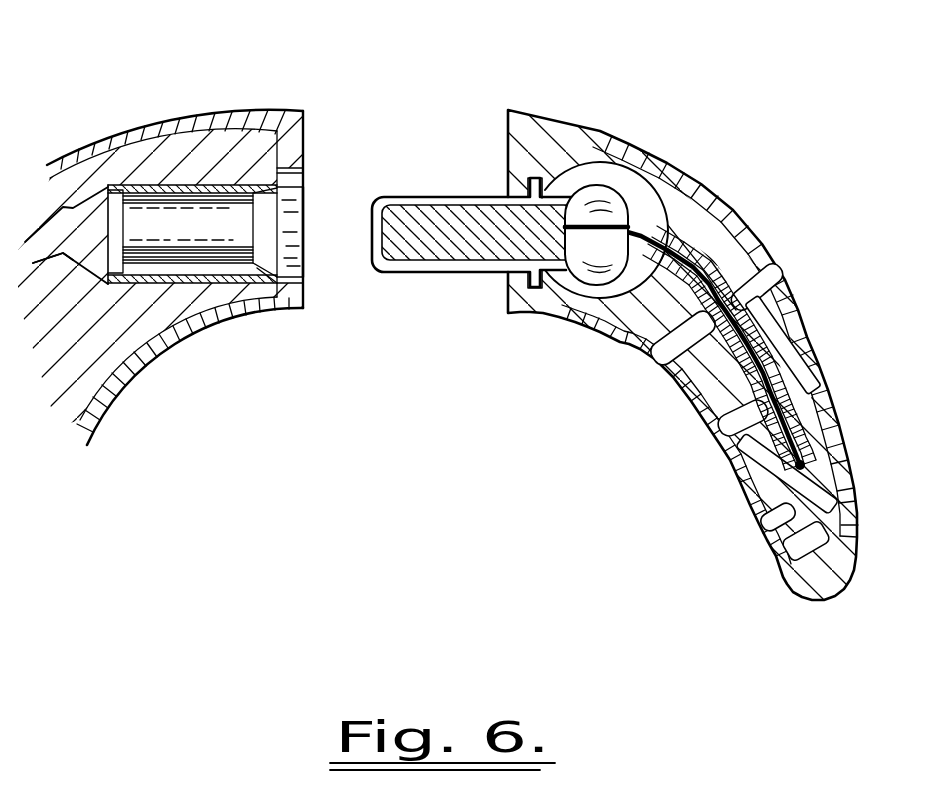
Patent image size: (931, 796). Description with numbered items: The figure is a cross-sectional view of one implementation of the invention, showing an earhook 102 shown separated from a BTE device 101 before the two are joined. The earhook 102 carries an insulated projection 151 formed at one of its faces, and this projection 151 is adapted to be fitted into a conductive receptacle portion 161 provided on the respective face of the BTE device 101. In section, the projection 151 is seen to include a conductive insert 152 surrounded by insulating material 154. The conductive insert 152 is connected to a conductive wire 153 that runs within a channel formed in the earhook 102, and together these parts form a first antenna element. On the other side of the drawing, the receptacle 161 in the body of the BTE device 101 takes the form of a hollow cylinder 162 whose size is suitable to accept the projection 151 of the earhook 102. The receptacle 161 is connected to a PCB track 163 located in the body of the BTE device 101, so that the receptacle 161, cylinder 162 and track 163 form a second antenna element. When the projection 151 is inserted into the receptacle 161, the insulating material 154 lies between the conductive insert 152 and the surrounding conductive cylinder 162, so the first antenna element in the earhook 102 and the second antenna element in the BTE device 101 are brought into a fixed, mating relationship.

The BTE device 101 is at (222, 243).
The earhook 102 is at (679, 314).
The insulated projection 151 is at (500, 228).
The conductive insert 152 is at (470, 250).
The conductive wire 153 is at (707, 280).
The insulating material 154 is at (497, 268).
The conductive receptacle portion 161 is at (310, 262).
The hollow cylinder 162 is at (250, 303).
The PCB track 163 is at (53, 252).